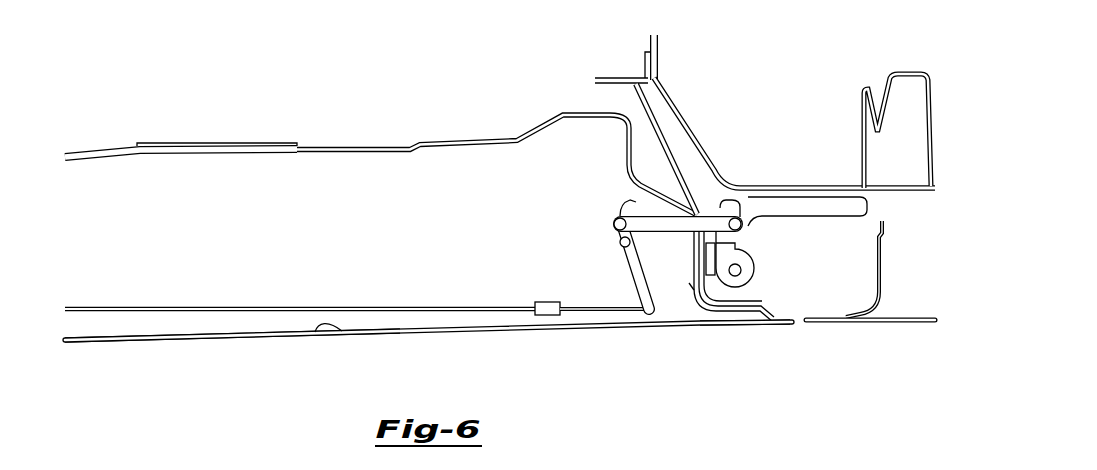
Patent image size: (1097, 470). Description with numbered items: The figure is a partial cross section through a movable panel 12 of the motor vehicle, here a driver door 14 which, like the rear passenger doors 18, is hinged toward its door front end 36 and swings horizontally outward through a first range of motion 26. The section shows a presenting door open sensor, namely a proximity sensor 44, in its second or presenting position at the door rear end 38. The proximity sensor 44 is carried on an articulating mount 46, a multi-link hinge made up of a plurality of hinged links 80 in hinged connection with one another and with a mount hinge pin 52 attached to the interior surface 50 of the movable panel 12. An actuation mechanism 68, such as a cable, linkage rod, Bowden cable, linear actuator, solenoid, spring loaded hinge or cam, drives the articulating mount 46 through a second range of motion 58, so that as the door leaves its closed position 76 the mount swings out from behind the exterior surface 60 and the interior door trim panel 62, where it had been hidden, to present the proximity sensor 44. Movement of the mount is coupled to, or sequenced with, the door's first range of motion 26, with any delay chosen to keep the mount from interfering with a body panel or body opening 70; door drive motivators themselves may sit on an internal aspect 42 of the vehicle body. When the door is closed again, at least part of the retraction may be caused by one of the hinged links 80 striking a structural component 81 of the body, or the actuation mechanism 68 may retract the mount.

The movable panel 12 is at (117, 359).
The driver door 14 is at (691, 328).
The rear passenger doors 18 is at (905, 323).
The first range of motion 26 is at (763, 330).
The door front end 36 is at (863, 326).
The door rear end 38 is at (731, 328).
The internal aspect 42 is at (765, 160).
The proximity sensor 44 is at (750, 226).
The articulating mount 46 is at (590, 243).
The interior surface 50 is at (323, 333).
The mount hinge pin 52 is at (613, 223).
The second range of motion 58 is at (664, 248).
The exterior surface 60 is at (193, 341).
The interior door trim panel 62 is at (385, 145).
The actuation mechanism 68 is at (392, 307).
The body opening 70 is at (803, 334).
The closed position 76 is at (630, 352).
The hinged links 80 is at (637, 216).
The structural component 81 is at (743, 257).